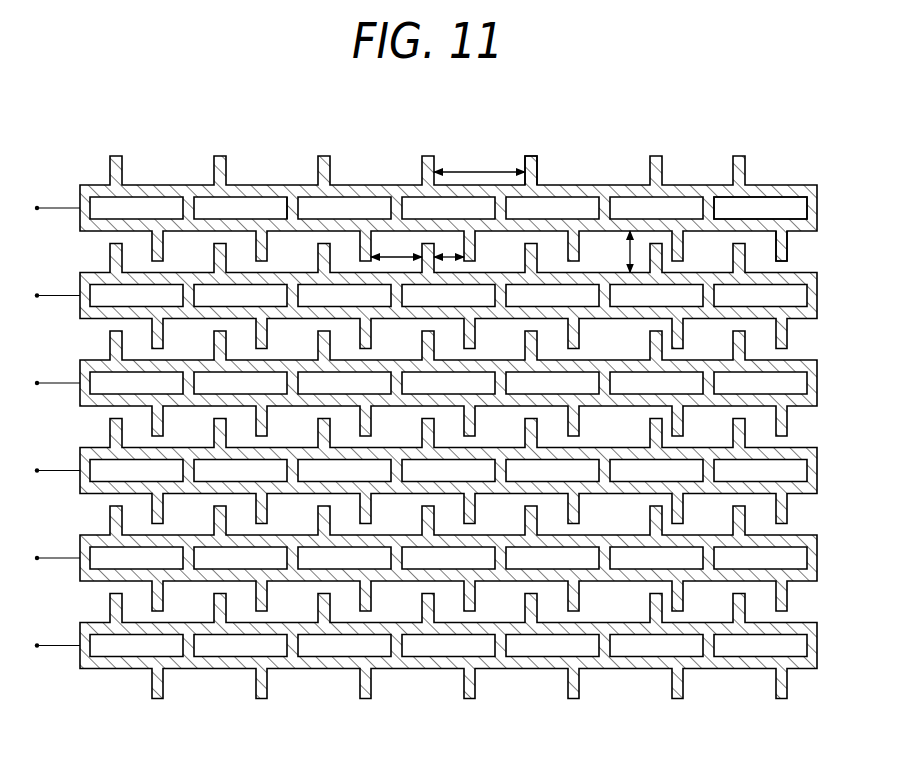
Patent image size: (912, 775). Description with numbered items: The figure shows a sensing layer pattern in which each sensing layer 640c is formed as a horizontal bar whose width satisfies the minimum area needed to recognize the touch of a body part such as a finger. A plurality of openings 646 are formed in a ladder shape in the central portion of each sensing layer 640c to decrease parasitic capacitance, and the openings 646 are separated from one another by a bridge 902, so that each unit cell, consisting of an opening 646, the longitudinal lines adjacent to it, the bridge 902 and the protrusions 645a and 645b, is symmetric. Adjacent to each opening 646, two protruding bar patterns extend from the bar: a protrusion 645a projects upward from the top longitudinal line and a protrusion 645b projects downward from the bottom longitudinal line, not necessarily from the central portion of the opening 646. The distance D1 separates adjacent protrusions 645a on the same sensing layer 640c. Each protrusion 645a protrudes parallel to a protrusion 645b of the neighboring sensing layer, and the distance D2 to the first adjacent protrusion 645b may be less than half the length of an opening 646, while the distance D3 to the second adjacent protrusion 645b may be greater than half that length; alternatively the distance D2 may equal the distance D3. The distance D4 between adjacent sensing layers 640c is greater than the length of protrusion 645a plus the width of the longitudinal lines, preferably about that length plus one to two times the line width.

The sensing layer 640c is at (377, 185).
The bridge 902 is at (292, 213).
The opening 646 is at (788, 208).
The protrusion 645a is at (537, 162).
The protrusion 645b is at (787, 254).
The distance between adjacent protrusions D1 is at (479, 163).
The distance between protrusion and first adjacent protrusion D2 is at (450, 245).
The distance between protrusion and second adjacent protrusion D3 is at (396, 245).
The distance between adjacent sensing layers D4 is at (612, 252).